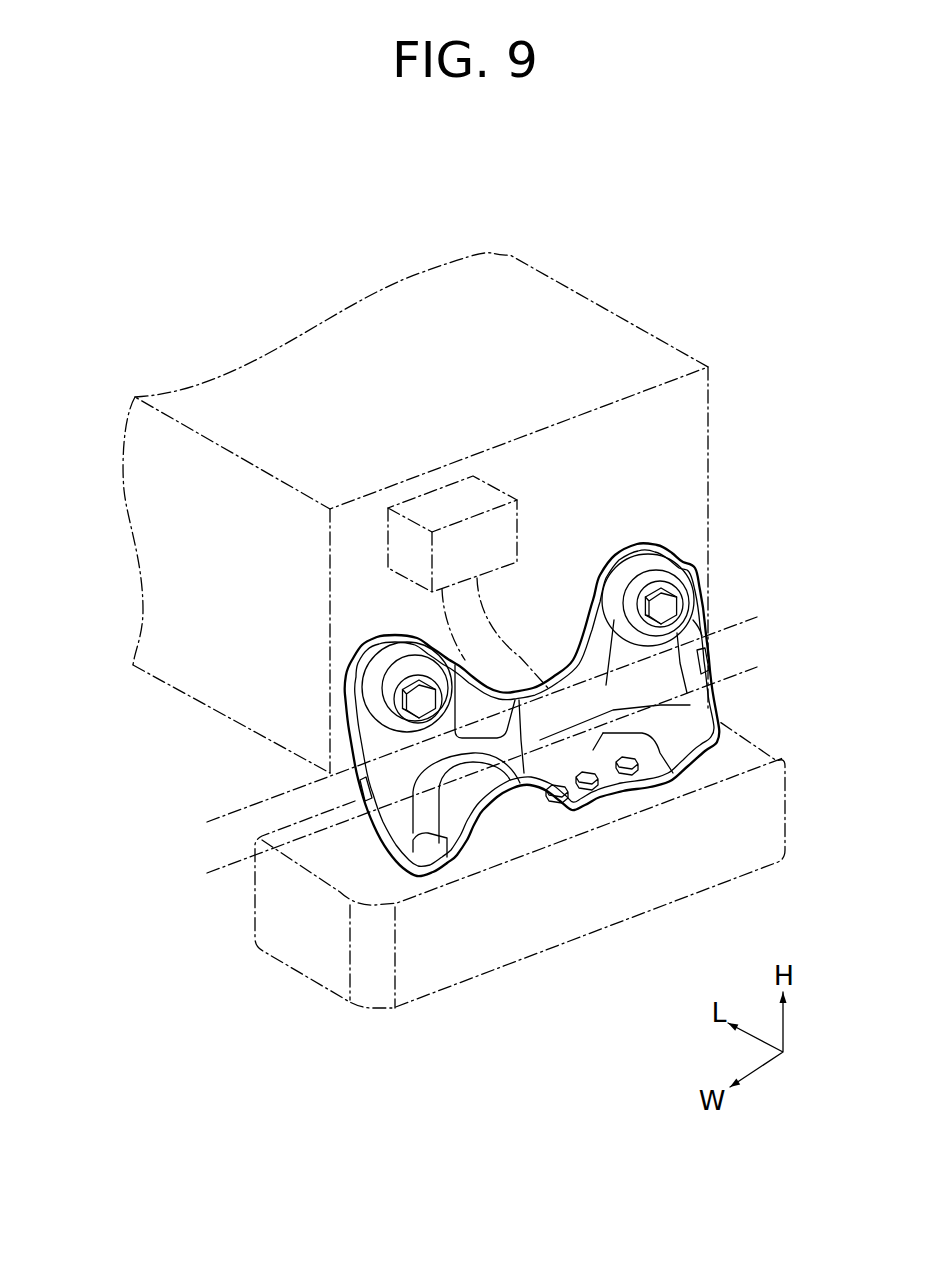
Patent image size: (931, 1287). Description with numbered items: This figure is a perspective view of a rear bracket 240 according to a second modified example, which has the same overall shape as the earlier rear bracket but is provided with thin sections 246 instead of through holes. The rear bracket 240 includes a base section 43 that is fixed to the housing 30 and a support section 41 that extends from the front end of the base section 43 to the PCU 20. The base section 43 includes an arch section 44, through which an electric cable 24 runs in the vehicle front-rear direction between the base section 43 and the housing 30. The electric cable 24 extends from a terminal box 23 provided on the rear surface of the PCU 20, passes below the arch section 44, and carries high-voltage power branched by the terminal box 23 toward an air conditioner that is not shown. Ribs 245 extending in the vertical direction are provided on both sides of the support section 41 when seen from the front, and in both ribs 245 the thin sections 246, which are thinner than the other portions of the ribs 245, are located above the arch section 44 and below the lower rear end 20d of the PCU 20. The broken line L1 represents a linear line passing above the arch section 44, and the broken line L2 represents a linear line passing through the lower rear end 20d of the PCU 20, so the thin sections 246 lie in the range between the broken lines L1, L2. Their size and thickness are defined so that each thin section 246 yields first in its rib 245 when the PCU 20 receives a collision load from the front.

The PCU 20 is at (323, 340).
The lower rear end of the PCU 20d is at (320, 760).
The terminal box 23 is at (443, 497).
The electric cable 24 is at (440, 617).
The support section 41 is at (612, 557).
The rear bracket 240 is at (668, 525).
The ribs 245 is at (387, 842).
The thin sections 246 is at (372, 697).
The housing 30 is at (295, 940).
The base section 43 is at (627, 778).
The arch section 44 is at (505, 826).
The broken line L1 is at (232, 868).
The broken line L2 is at (233, 813).